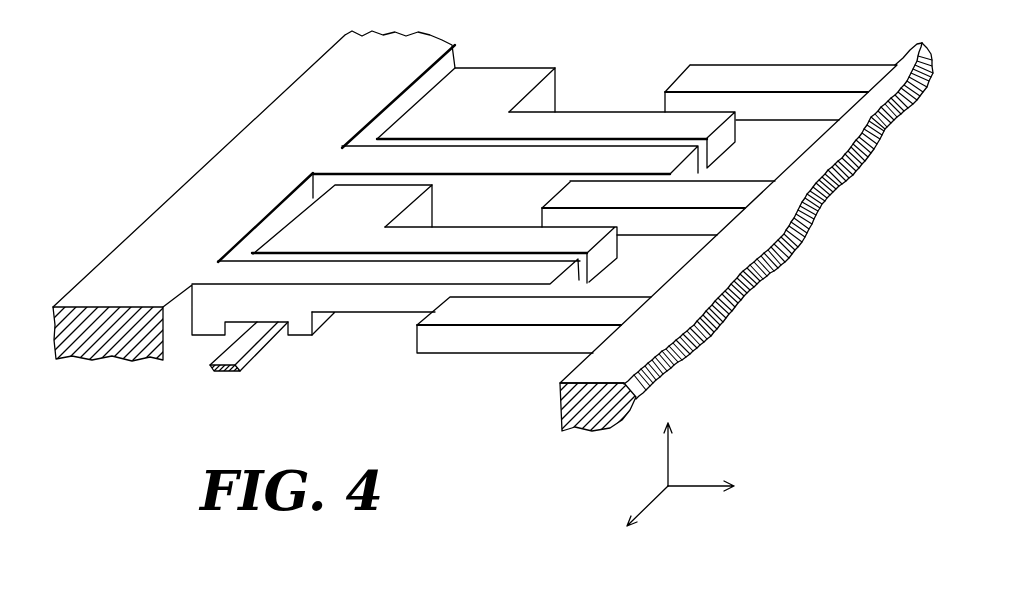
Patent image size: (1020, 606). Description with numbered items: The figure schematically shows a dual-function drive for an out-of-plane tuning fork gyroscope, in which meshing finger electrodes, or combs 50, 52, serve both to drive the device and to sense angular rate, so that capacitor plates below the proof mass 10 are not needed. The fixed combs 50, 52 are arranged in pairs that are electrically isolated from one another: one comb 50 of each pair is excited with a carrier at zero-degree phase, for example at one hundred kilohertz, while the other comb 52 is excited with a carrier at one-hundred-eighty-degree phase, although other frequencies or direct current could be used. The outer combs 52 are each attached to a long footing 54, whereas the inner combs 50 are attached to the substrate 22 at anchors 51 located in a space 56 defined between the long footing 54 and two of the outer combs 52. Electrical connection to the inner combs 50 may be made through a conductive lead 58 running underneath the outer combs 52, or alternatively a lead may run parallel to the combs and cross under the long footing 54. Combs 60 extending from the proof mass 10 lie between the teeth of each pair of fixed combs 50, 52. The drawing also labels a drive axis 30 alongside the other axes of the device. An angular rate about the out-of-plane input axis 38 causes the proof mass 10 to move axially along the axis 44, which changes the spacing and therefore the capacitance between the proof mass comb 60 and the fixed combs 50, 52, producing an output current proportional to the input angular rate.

The proof mass 10 is at (758, 248).
The substrate 22 is at (348, 360).
The drive axis 30 is at (694, 487).
The input axis 38 is at (668, 452).
The axis 44 is at (650, 502).
The inner comb 50 is at (581, 122).
The anchor 51 is at (505, 84).
The outer comb 52 is at (366, 156).
The long footing 54 is at (268, 138).
The space 56 is at (272, 222).
The conductive lead 58 is at (226, 358).
The proof mass comb 60 is at (759, 83).